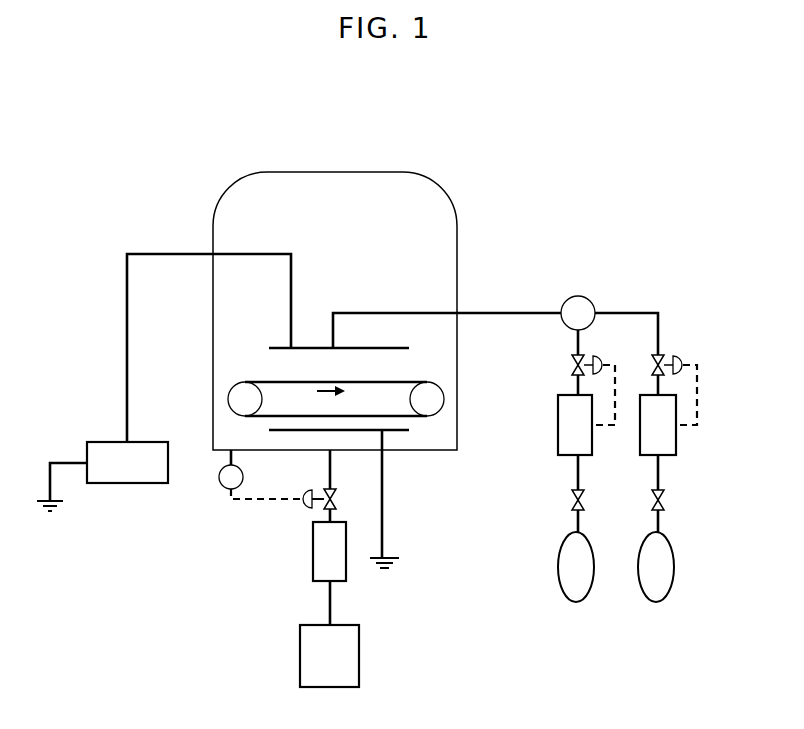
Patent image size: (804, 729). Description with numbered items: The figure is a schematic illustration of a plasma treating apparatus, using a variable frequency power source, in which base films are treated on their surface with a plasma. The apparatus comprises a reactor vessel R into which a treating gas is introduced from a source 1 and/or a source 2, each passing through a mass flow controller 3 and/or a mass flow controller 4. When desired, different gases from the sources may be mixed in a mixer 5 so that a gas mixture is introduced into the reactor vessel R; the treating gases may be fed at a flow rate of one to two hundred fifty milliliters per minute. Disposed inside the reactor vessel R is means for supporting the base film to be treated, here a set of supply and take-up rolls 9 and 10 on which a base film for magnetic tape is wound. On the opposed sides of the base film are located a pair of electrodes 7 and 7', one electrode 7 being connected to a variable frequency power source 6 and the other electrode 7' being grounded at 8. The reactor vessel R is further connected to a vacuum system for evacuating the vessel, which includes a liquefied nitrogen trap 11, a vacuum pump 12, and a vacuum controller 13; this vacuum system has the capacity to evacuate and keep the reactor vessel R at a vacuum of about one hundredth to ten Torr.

The reactor vessel R is at (453, 200).
The gas source 1 is at (572, 590).
The gas source 2 is at (655, 585).
The mass flow controller 3 is at (558, 425).
The mass flow controller 4 is at (676, 410).
The mixer 5 is at (565, 296).
The variable frequency power source 6 is at (128, 475).
The electrode 7 is at (415, 307).
The electrode 7' is at (350, 494).
The ground 8 is at (386, 552).
The supply roll 9 is at (243, 390).
The take-up roll 10 is at (437, 392).
The liquefied nitrogen trap 11 is at (318, 558).
The vacuum pump 12 is at (309, 655).
The vacuum controller 13 is at (256, 505).